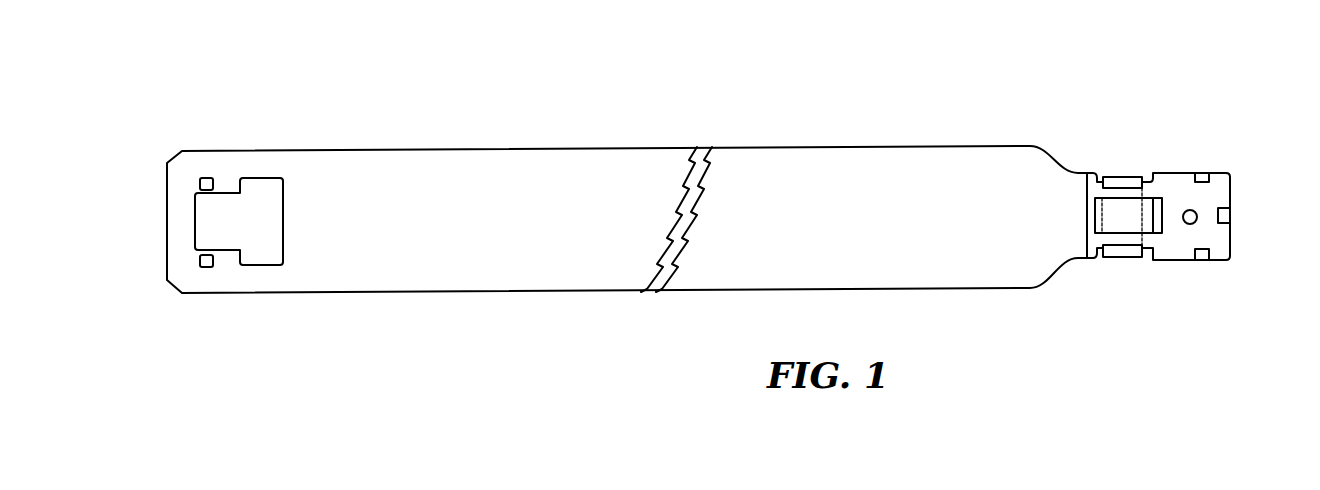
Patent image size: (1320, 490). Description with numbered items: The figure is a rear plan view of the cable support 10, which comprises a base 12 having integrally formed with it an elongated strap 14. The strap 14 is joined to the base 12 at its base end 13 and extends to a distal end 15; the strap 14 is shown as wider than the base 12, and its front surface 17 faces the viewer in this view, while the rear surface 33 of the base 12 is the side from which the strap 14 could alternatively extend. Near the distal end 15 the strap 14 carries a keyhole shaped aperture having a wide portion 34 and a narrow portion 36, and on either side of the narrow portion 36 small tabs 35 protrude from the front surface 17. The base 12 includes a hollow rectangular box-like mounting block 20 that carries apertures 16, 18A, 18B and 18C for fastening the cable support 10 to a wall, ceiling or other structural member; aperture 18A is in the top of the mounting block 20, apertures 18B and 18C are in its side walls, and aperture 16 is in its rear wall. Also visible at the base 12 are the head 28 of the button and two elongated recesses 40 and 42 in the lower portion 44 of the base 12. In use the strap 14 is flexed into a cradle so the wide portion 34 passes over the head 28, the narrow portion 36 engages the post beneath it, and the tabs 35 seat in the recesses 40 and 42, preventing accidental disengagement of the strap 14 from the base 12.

The cable support 10 is at (570, 325).
The base 12 is at (1218, 113).
The base end 13 is at (1073, 147).
The strap 14 is at (1000, 158).
The distal end 15 is at (175, 315).
The aperture 16 is at (1194, 212).
The front surface 17 is at (588, 234).
The aperture 18A is at (1232, 216).
The aperture 18B is at (1204, 175).
The aperture 18C is at (1202, 261).
The mounting block 20 is at (1220, 240).
The head 28 is at (1115, 176).
The rear surface 33 is at (1164, 203).
The wide portion 34 is at (265, 252).
The tabs 35 is at (206, 176).
The narrow portion 36 is at (227, 203).
The recess 40 is at (1143, 178).
The recess 42 is at (1145, 258).
The lower portion 44 is at (1097, 238).